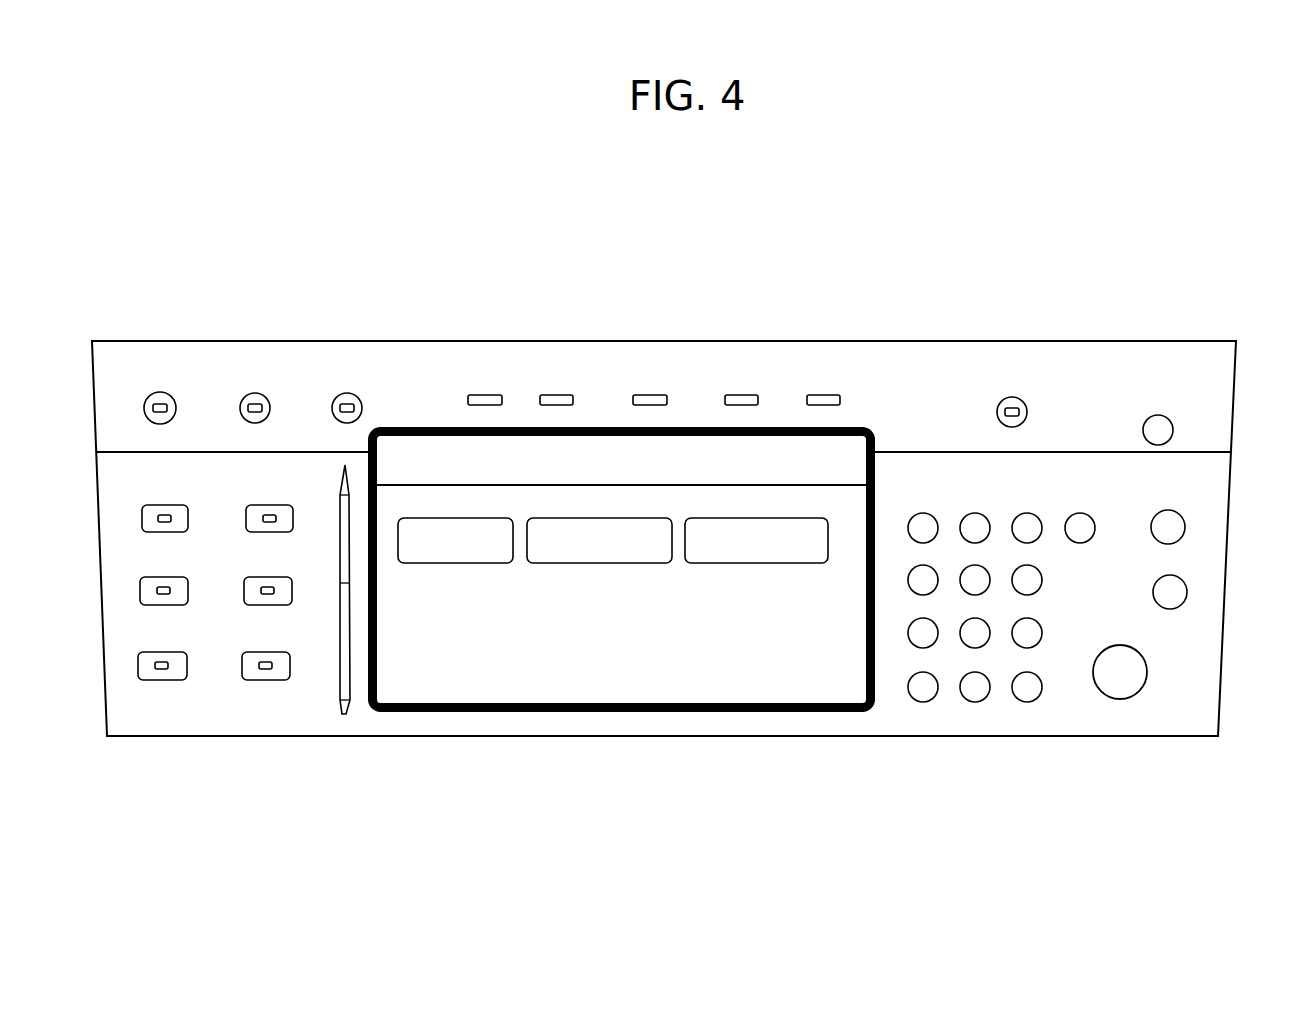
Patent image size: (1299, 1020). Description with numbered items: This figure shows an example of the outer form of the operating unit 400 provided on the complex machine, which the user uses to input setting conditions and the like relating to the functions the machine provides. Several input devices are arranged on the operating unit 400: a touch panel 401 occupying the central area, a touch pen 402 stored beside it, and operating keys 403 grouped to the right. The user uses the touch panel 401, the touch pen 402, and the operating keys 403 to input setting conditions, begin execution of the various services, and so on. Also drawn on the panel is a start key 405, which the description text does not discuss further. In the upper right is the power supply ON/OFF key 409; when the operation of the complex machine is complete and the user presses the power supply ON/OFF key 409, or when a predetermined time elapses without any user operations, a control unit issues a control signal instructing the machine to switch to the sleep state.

The operating unit 400 is at (598, 324).
The touch panel 401 is at (402, 722).
The touch pen 402 is at (343, 716).
The operating keys 403 is at (981, 722).
The start key 405 is at (1120, 680).
The power supply ON/OFF key 409 is at (1158, 427).